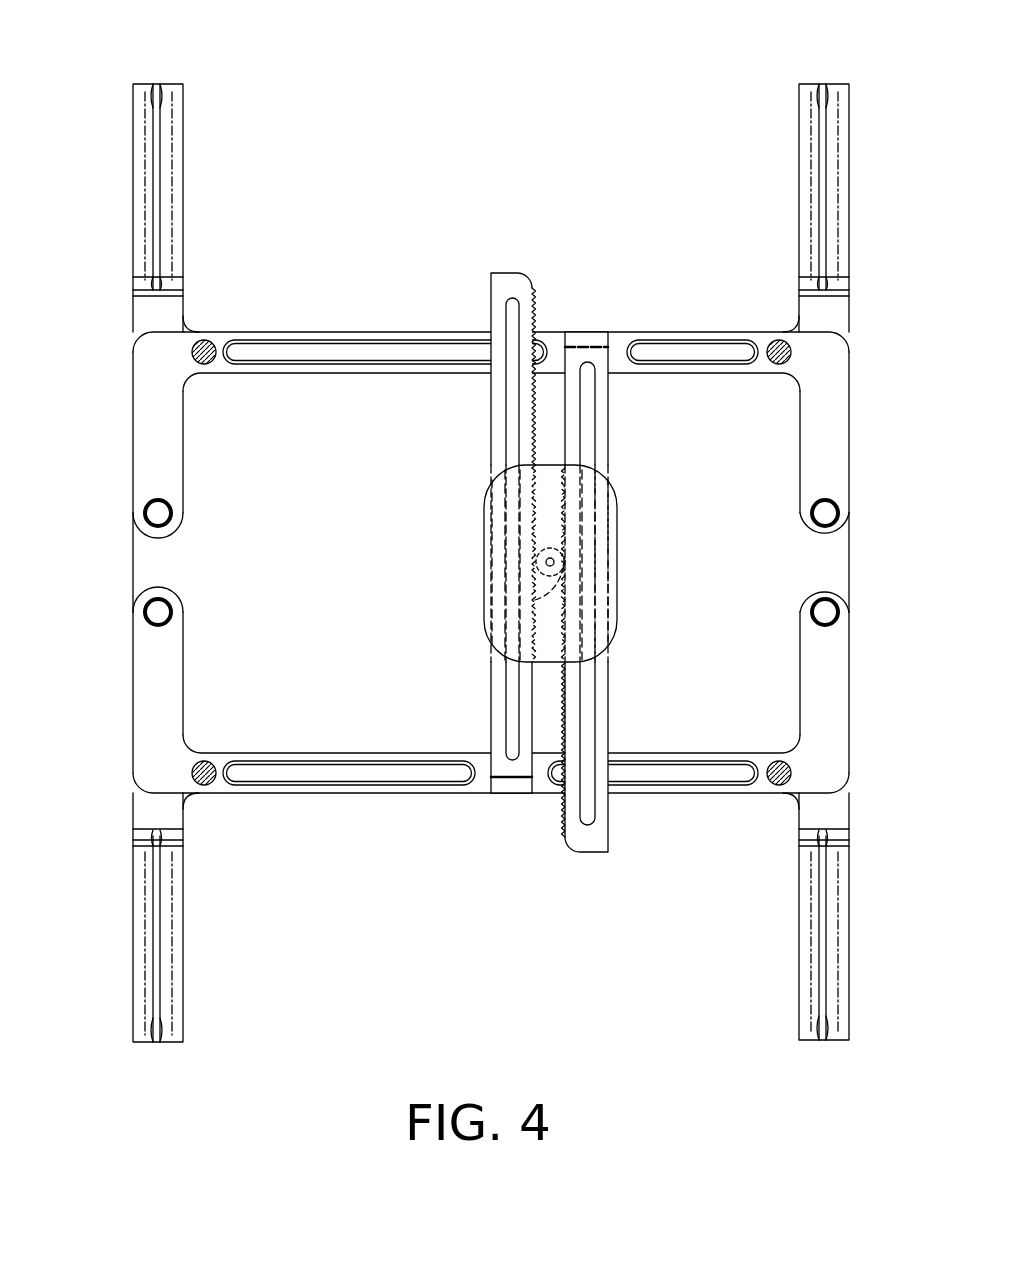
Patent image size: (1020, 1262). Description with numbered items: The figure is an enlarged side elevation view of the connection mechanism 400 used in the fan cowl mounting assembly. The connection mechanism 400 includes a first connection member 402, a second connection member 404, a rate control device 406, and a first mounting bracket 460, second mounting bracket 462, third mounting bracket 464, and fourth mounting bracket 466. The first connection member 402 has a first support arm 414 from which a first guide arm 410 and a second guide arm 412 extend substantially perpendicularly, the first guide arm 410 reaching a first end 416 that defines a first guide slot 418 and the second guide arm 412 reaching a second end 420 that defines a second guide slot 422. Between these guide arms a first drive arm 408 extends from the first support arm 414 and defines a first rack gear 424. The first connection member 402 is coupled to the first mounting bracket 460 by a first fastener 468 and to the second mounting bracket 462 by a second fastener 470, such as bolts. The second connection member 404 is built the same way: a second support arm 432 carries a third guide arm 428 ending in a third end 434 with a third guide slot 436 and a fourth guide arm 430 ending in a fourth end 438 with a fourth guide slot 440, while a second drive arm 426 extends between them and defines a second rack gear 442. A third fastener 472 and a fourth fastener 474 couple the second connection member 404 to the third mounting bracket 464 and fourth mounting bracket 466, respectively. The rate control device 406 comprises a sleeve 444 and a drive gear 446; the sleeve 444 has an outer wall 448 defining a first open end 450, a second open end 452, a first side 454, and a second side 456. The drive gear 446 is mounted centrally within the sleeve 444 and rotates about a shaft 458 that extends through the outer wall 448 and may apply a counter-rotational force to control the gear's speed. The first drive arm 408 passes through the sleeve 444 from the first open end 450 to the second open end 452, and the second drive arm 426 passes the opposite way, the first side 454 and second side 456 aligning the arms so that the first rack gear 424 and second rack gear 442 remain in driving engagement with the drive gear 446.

The connection mechanism 400 is at (336, 76).
The first connection member 402 is at (634, 272).
The second connection member 404 is at (314, 815).
The rate control device 406 is at (486, 639).
The first drive arm 408 is at (676, 396).
The first guide arm 410 is at (128, 435).
The second guide arm 412 is at (904, 398).
The first support arm 414 is at (242, 378).
The first end 416 is at (155, 538).
The first guide slot 418 is at (145, 515).
The second end 420 is at (828, 538).
The second guide slot 422 is at (838, 515).
The first rack gear 424 is at (556, 722).
The second drive arm 426 is at (484, 730).
The third guide arm 428 is at (904, 671).
The fourth guide arm 430 is at (128, 708).
The second support arm 432 is at (242, 748).
The third end 434 is at (828, 592).
The third guide slot 436 is at (838, 614).
The fourth end 438 is at (155, 592).
The fourth guide slot 440 is at (145, 614).
The second rack gear 442 is at (545, 414).
The sleeve 444 is at (630, 525).
The drive gear 446 is at (535, 588).
The outer wall 448 is at (553, 508).
The first open end 450 is at (490, 472).
The second open end 452 is at (556, 668).
The first side 454 is at (492, 560).
The second side 456 is at (592, 590).
The shaft 458 is at (558, 562).
The first mounting bracket 460 is at (140, 84).
The second mounting bracket 462 is at (842, 84).
The third mounting bracket 464 is at (846, 1042).
The fourth mounting bracket 466 is at (135, 1042).
The first fastener 468 is at (209, 343).
The second fastener 470 is at (776, 342).
The third fastener 472 is at (790, 771).
The fourth fastener 474 is at (199, 771).